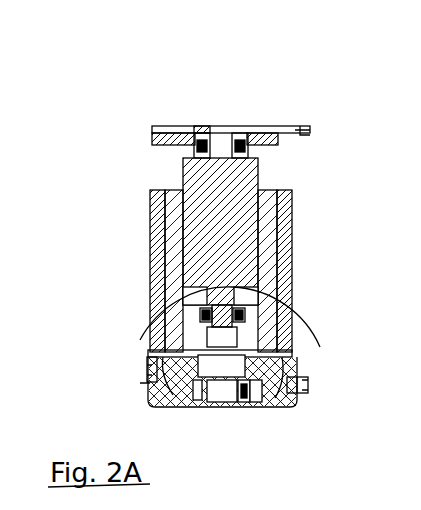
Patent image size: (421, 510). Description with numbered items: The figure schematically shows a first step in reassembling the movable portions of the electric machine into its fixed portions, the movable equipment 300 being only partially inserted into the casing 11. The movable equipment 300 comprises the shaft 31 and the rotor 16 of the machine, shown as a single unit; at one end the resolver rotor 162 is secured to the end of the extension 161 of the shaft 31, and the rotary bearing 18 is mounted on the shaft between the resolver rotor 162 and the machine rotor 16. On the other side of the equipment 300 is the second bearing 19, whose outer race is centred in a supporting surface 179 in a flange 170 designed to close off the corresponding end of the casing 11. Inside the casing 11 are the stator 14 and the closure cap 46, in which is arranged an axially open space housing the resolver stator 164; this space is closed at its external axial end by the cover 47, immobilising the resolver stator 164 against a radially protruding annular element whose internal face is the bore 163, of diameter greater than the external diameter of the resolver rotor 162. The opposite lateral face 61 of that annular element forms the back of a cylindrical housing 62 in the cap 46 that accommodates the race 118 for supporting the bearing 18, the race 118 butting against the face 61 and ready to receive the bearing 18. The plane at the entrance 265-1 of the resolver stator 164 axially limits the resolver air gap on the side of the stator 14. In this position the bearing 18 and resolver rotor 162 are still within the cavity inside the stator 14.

The flange 170 is at (150, 130).
The supporting surface 179 is at (222, 128).
The second bearing 19 is at (240, 130).
The movable equipment 300 is at (226, 213).
The casing 11 is at (148, 245).
The rotor 16 is at (234, 258).
The rotary bearing 18 is at (292, 266).
The stator 14 is at (200, 308).
The extension 161 is at (246, 310).
The shaft 31 is at (207, 328).
The resolver rotor 162 is at (238, 328).
The race 118 is at (196, 353).
The closure cap 46 is at (172, 394).
The cylindrical housing 62 is at (150, 382).
The lateral face 61 is at (308, 383).
The cover 47 is at (200, 402).
The entrance 265-1 is at (220, 398).
The bore 163 is at (238, 408).
The resolver stator 164 is at (278, 400).